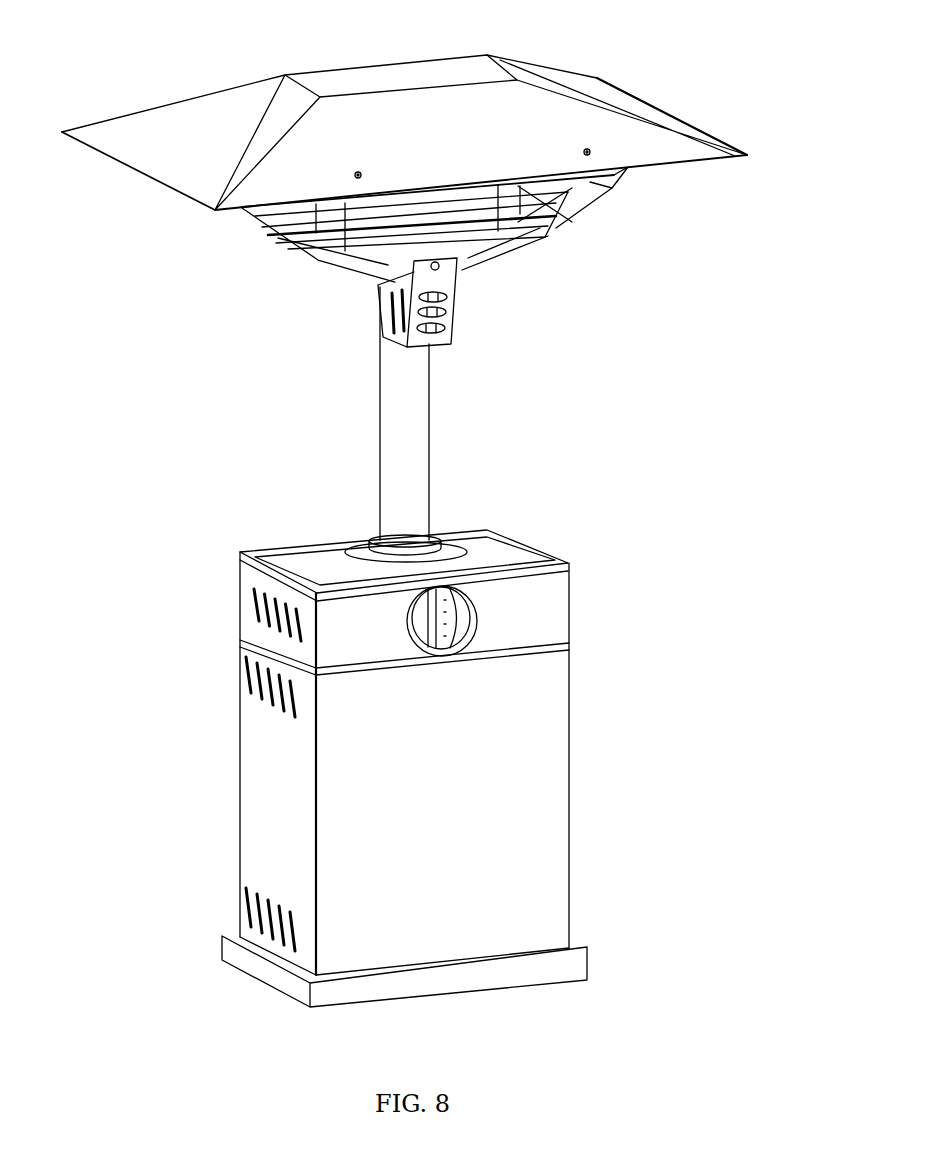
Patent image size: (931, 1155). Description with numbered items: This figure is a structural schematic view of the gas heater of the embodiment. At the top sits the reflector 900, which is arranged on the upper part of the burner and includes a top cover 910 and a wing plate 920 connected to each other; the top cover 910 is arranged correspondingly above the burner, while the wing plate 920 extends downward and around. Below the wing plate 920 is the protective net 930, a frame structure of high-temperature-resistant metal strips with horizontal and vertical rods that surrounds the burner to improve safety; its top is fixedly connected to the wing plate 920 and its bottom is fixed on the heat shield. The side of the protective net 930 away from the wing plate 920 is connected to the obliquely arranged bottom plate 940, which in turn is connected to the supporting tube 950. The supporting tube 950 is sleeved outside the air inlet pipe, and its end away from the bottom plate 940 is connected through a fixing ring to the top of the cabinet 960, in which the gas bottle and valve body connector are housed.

The reflector 900 is at (630, 81).
The top cover 910 is at (434, 78).
The wing plate 920 is at (645, 148).
The protective net 930 is at (583, 210).
The bottom plate 940 is at (478, 270).
The supporting tube 950 is at (408, 455).
The cabinet 960 is at (547, 723).